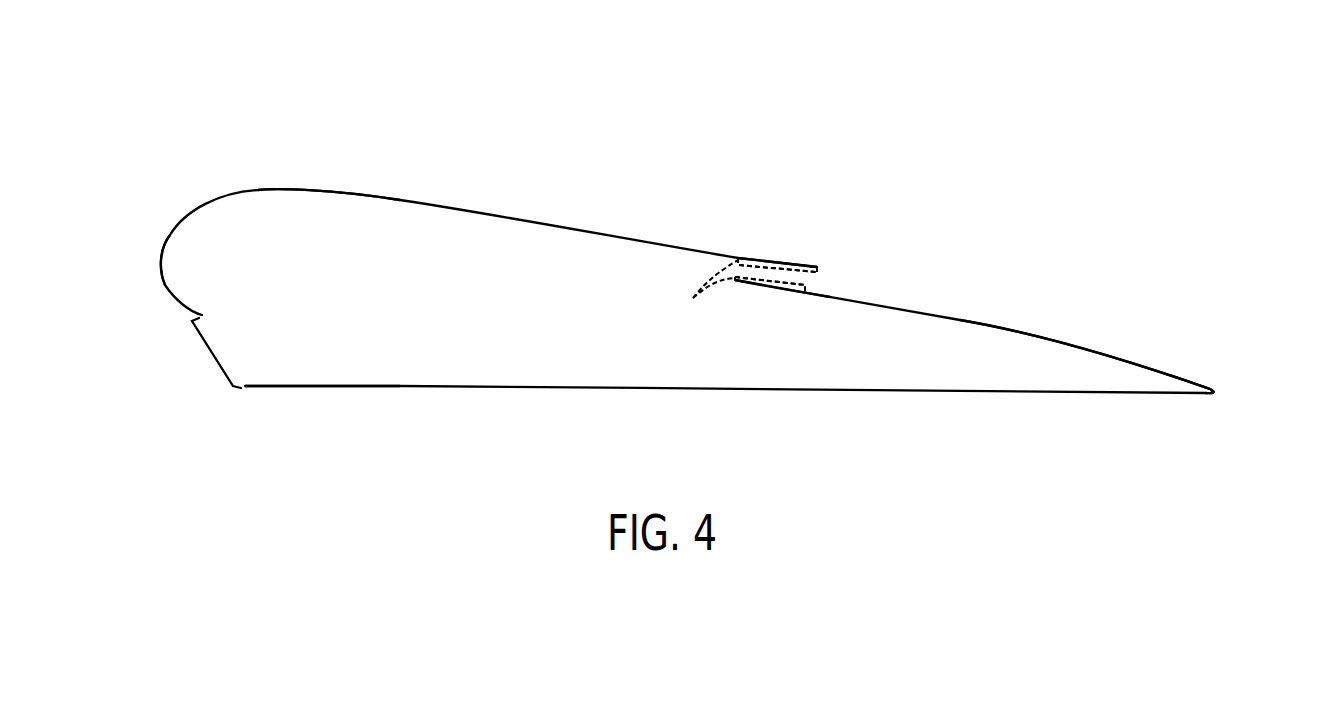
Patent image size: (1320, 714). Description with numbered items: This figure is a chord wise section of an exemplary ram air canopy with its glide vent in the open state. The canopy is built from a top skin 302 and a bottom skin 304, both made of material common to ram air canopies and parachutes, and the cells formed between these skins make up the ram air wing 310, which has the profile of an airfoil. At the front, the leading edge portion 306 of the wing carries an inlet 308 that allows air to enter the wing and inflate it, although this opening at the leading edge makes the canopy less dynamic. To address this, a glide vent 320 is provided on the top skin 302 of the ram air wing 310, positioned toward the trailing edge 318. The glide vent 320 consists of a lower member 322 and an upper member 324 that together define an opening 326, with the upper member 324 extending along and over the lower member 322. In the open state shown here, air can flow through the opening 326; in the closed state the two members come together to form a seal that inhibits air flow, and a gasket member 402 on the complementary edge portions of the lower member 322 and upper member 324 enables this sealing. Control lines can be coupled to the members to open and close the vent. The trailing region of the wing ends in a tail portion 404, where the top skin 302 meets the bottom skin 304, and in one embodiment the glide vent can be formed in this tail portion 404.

The top skin 302 is at (258, 192).
The bottom skin 304 is at (505, 387).
The leading edge portion 306 is at (130, 278).
The inlet 308 is at (206, 353).
The ram air wing 310 is at (678, 108).
The trailing edge 318 is at (1127, 288).
The glide vent 320 is at (818, 227).
The lower member 322 is at (768, 288).
The upper member 324 is at (768, 262).
The opening 326 is at (820, 272).
The gasket member 402 is at (695, 288).
The tail portion 404 is at (1224, 388).